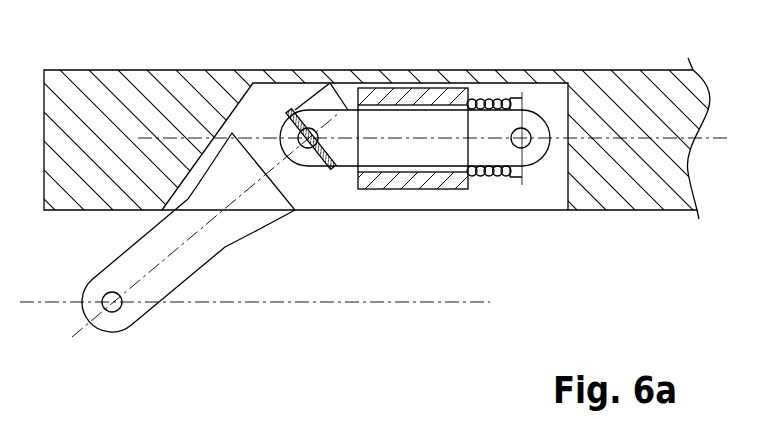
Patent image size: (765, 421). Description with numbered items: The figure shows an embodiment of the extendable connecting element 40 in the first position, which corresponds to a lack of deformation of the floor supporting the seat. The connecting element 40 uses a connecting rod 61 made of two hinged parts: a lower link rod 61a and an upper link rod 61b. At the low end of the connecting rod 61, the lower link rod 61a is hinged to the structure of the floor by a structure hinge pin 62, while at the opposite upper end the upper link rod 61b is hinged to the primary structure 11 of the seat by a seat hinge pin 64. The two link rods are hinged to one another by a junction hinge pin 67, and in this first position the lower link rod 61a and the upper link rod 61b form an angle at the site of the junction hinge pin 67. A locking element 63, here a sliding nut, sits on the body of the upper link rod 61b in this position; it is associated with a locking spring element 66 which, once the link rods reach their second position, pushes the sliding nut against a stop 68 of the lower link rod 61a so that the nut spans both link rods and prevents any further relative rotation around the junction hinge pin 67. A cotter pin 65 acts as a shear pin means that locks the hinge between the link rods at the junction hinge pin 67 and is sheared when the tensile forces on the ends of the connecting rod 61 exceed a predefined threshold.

The primary structure 11 is at (123, 100).
The stop 68 is at (190, 134).
The extendable connecting element 40 is at (264, 250).
The connecting rod 61 is at (126, 235).
The lower link rod 61a is at (187, 260).
The upper link rod 61b is at (440, 127).
The structure hinge pin 62 is at (112, 312).
The locking element 63 is at (433, 92).
The seat hinge pin 64 is at (528, 143).
The cotter pin 65 is at (292, 112).
The locking spring element 66 is at (488, 178).
The junction hinge pin 67 is at (334, 110).